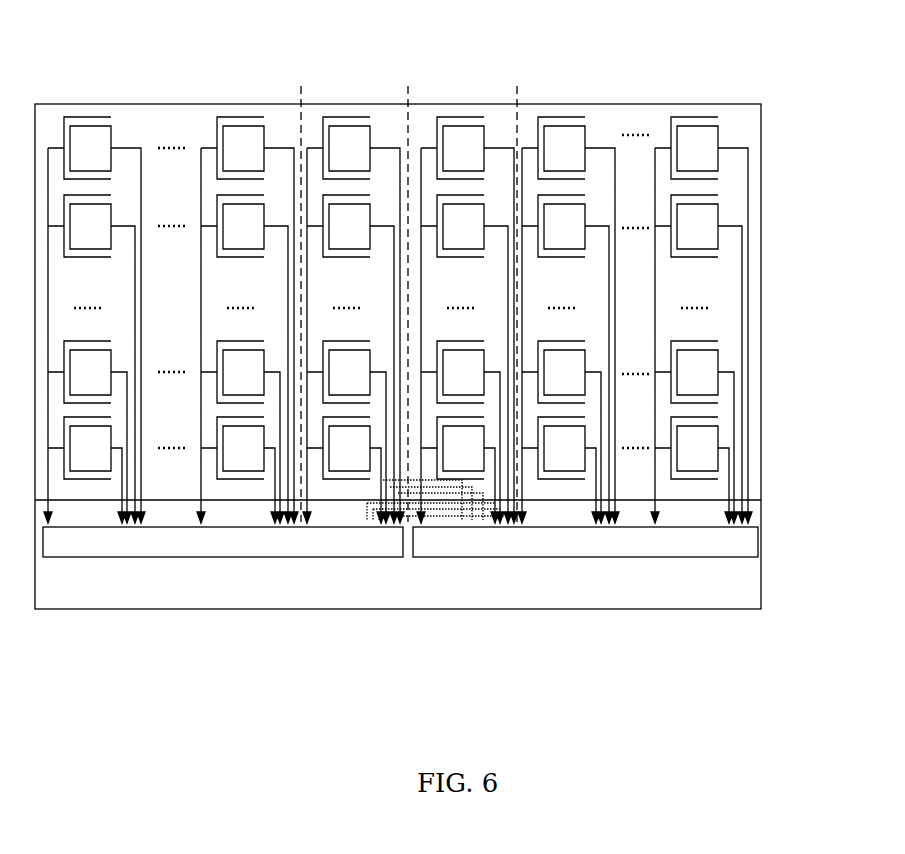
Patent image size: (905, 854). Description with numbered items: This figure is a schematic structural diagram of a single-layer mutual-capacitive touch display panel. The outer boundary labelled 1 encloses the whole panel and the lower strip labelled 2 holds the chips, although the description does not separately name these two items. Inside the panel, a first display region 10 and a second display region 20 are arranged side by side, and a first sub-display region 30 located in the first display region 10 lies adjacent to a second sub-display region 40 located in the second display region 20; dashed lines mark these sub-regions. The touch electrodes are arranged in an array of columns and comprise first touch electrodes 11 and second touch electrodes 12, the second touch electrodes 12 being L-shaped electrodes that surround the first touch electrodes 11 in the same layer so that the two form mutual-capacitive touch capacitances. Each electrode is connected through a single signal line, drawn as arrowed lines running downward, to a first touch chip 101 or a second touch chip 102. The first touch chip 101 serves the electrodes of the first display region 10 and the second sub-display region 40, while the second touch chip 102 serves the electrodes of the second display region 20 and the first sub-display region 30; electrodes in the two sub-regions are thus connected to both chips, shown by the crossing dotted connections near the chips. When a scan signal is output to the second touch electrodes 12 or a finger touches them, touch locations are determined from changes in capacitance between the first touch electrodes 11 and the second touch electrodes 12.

The display panel 1 is at (762, 368).
The driving circuit region 2 is at (762, 600).
The first display region 10 is at (410, 72).
The second display region 20 is at (767, 72).
The first sub-display region 30 is at (301, 105).
The second sub-display region 40 is at (517, 105).
The first touch electrode 11 is at (111, 138).
The second touch electrode 12 is at (77, 117).
The first touch chip 101 is at (192, 557).
The second touch chip 102 is at (528, 557).